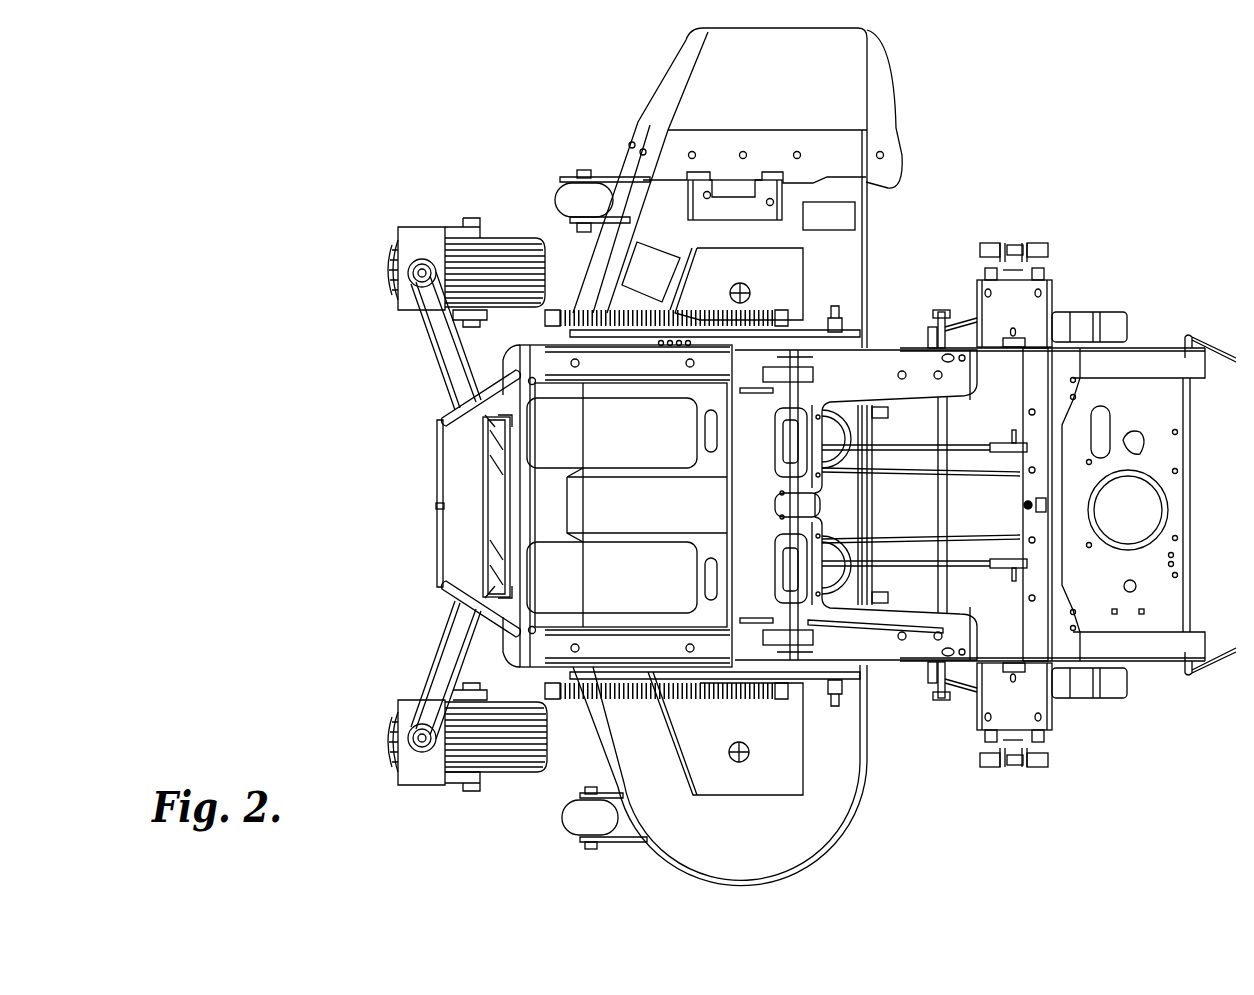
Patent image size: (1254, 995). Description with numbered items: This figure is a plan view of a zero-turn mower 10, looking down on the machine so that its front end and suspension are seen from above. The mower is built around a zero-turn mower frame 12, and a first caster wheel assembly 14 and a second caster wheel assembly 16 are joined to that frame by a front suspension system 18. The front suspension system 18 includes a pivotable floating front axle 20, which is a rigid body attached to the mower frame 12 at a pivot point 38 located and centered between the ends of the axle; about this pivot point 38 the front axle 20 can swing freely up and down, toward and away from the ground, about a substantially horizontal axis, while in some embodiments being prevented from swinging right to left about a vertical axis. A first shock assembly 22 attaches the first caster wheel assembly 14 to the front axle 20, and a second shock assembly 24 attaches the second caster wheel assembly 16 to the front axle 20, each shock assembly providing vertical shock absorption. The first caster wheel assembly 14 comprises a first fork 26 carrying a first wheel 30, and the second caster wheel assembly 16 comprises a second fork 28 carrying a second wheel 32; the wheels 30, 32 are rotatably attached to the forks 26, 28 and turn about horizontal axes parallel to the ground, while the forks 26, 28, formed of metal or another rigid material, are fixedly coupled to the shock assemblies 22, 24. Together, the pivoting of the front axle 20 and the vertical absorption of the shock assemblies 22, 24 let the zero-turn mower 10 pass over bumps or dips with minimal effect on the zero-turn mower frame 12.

The zero-turn mower 10 is at (990, 192).
The zero-turn mower frame 12 is at (460, 458).
The first caster wheel assembly 14 is at (452, 192).
The second caster wheel assembly 16 is at (464, 796).
The front suspension system 18 is at (443, 633).
The pivotable floating front axle 20 is at (460, 372).
The first shock assembly 22 is at (416, 264).
The second shock assembly 24 is at (415, 742).
The first fork 26 is at (410, 316).
The second fork 28 is at (405, 775).
The first wheel 30 is at (510, 240).
The second wheel 32 is at (520, 763).
The pivot point 38 is at (437, 506).